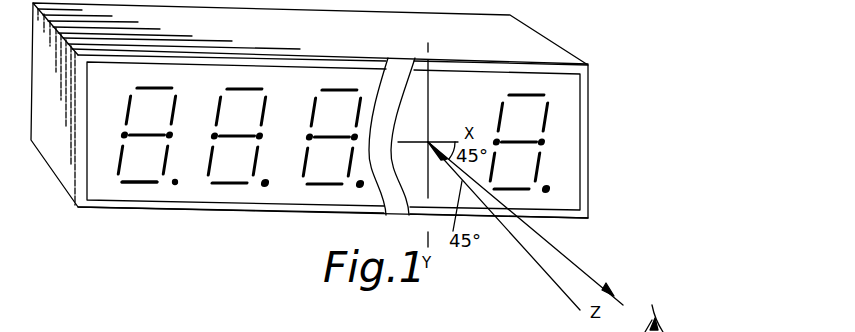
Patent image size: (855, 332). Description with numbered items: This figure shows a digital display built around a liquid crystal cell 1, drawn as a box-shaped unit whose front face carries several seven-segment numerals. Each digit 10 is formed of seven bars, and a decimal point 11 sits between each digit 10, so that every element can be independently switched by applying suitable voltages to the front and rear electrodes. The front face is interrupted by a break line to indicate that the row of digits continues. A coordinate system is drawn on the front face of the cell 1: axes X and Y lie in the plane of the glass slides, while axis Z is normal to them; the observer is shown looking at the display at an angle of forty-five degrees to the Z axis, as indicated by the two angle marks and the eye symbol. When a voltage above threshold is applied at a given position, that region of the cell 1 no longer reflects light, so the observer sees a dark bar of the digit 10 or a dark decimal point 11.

The cell 1 is at (289, 168).
The digit 10 is at (141, 183).
The decimal point 11 is at (176, 183).